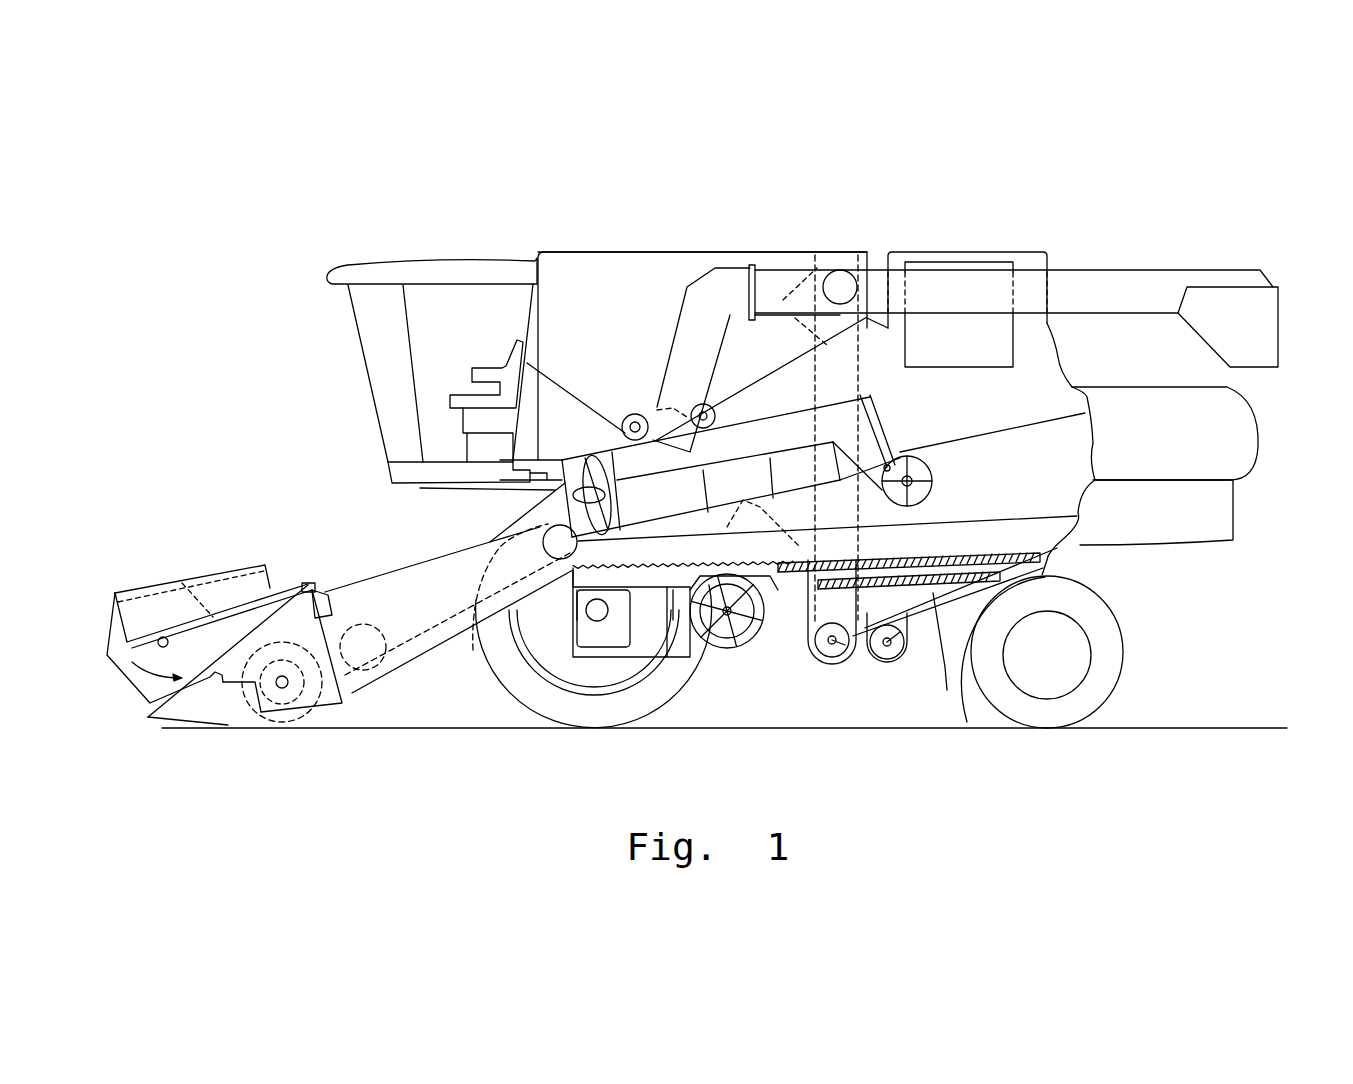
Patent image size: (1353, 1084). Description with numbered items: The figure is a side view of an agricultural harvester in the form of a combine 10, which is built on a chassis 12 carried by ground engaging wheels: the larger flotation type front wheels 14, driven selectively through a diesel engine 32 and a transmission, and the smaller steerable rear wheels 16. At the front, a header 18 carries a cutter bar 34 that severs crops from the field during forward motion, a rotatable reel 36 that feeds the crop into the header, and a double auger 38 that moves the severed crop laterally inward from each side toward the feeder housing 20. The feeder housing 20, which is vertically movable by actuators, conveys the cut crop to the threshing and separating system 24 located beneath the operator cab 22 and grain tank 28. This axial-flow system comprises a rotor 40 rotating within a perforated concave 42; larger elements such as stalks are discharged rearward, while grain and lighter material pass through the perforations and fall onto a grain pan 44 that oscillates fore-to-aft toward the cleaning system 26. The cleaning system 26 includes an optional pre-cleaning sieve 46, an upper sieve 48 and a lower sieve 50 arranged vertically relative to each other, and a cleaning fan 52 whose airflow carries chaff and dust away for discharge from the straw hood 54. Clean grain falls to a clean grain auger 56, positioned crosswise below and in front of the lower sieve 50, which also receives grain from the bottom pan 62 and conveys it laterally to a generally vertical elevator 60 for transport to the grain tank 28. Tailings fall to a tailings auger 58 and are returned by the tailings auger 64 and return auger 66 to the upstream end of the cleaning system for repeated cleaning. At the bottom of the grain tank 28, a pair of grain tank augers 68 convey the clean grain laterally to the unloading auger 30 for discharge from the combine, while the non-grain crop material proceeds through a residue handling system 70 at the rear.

The combine 10 is at (424, 249).
The chassis 12 is at (1062, 566).
The front wheels 14 is at (503, 688).
The rear wheels 16 is at (1118, 670).
The header 18 is at (197, 566).
The feeder housing 20 is at (393, 567).
The operator cab 22 is at (363, 352).
The threshing and separating system 24 is at (509, 503).
The cleaning system 26 is at (791, 657).
The grain tank 28 is at (588, 253).
The unloading auger 30 is at (1135, 275).
The diesel engine 32 is at (948, 265).
The cutter bar 34 is at (233, 720).
The rotatable reel 36 is at (112, 635).
The double auger 38 is at (287, 713).
The rotor 40 is at (580, 458).
The perforated concave 42 is at (762, 443).
The grain pan 44 is at (563, 587).
The pre-cleaning sieve 46 is at (862, 557).
The upper sieve 48 is at (960, 557).
The lower sieve 50 is at (947, 690).
The cleaning fan 52 is at (762, 660).
The straw hood 54 is at (1242, 427).
The clean grain auger 56 is at (833, 667).
The tailings auger 58 is at (968, 582).
The elevator 60 is at (867, 373).
The bottom pan 62 is at (965, 595).
The tailings auger 64 is at (885, 665).
The return auger 66 is at (799, 533).
The grain tank augers 68 is at (634, 414).
The residue handling system 70 is at (1194, 550).